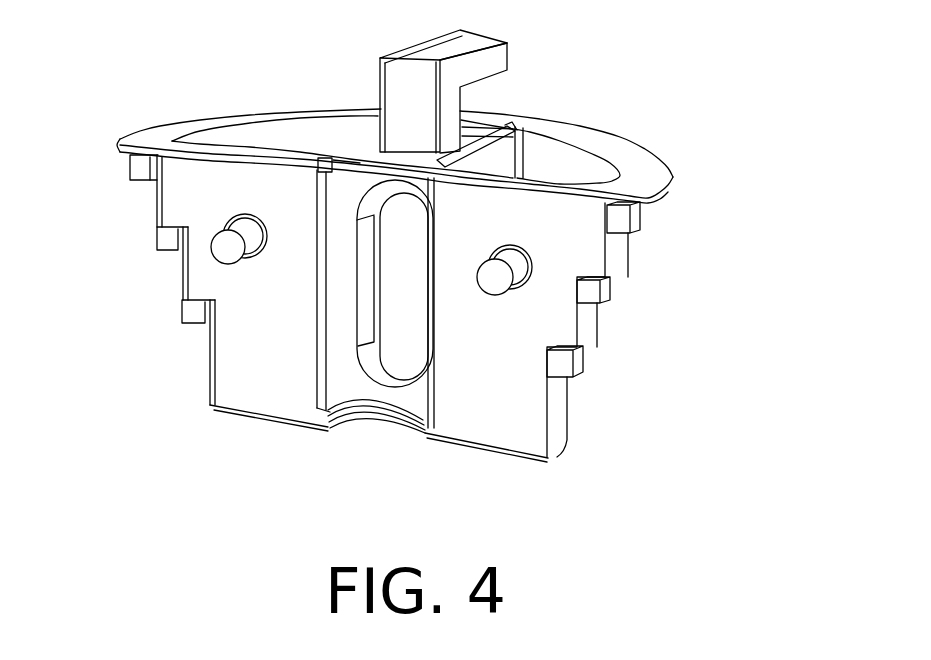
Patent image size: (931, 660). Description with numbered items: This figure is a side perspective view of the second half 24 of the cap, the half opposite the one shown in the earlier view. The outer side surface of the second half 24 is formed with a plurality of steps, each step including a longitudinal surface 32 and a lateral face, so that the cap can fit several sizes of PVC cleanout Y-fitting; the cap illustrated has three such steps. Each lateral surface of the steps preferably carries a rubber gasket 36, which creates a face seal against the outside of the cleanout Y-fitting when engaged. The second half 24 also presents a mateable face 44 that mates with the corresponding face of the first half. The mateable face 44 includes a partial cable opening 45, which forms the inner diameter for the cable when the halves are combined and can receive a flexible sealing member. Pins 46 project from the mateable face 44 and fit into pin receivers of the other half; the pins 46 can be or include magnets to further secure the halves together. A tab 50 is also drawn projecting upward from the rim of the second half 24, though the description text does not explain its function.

The second half 24 is at (633, 150).
The longitudinal surface 32 is at (587, 327).
The rubber gasket 36 is at (610, 297).
The mateable face 44 is at (573, 250).
The partial cable opening 45 is at (360, 160).
The pins 46 is at (228, 248).
The tab 50 is at (493, 58).